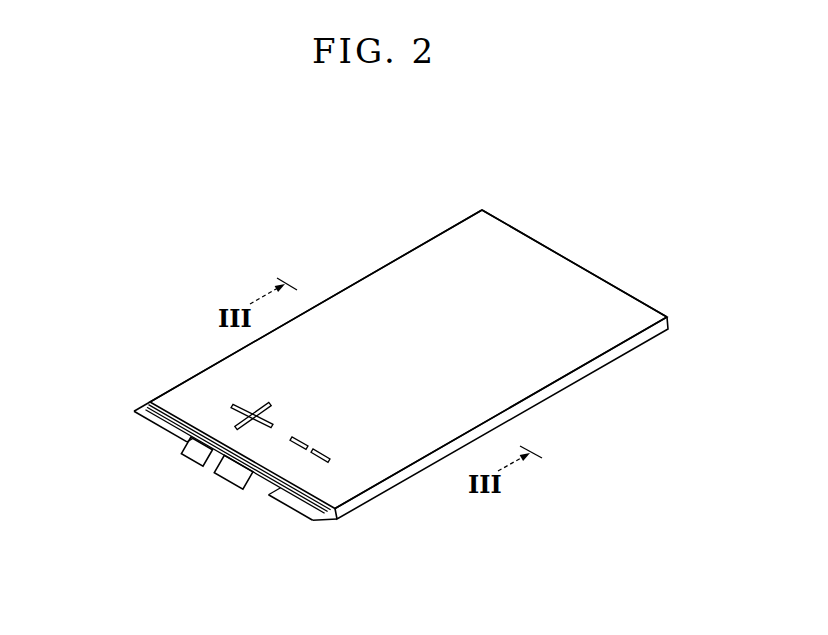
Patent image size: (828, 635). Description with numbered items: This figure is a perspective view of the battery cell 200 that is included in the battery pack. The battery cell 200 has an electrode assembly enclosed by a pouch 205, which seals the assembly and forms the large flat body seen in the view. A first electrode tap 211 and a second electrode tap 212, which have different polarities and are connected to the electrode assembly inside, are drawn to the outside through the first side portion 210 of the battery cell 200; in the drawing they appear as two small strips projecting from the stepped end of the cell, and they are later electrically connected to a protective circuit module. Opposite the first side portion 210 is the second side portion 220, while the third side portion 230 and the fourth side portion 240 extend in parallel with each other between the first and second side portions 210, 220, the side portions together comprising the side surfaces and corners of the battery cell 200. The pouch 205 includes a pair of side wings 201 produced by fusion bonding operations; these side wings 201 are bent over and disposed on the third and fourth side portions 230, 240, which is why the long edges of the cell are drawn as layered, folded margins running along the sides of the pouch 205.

The battery cell 200 is at (537, 182).
The side wings 201 is at (208, 368).
The pouch 205 is at (463, 266).
The first side portion 210 is at (134, 457).
The first electrode tap 211 is at (181, 458).
The second electrode tap 212 is at (250, 490).
The second side portion 220 is at (590, 245).
The third side portion 230 is at (384, 246).
The fourth side portion 240 is at (607, 390).